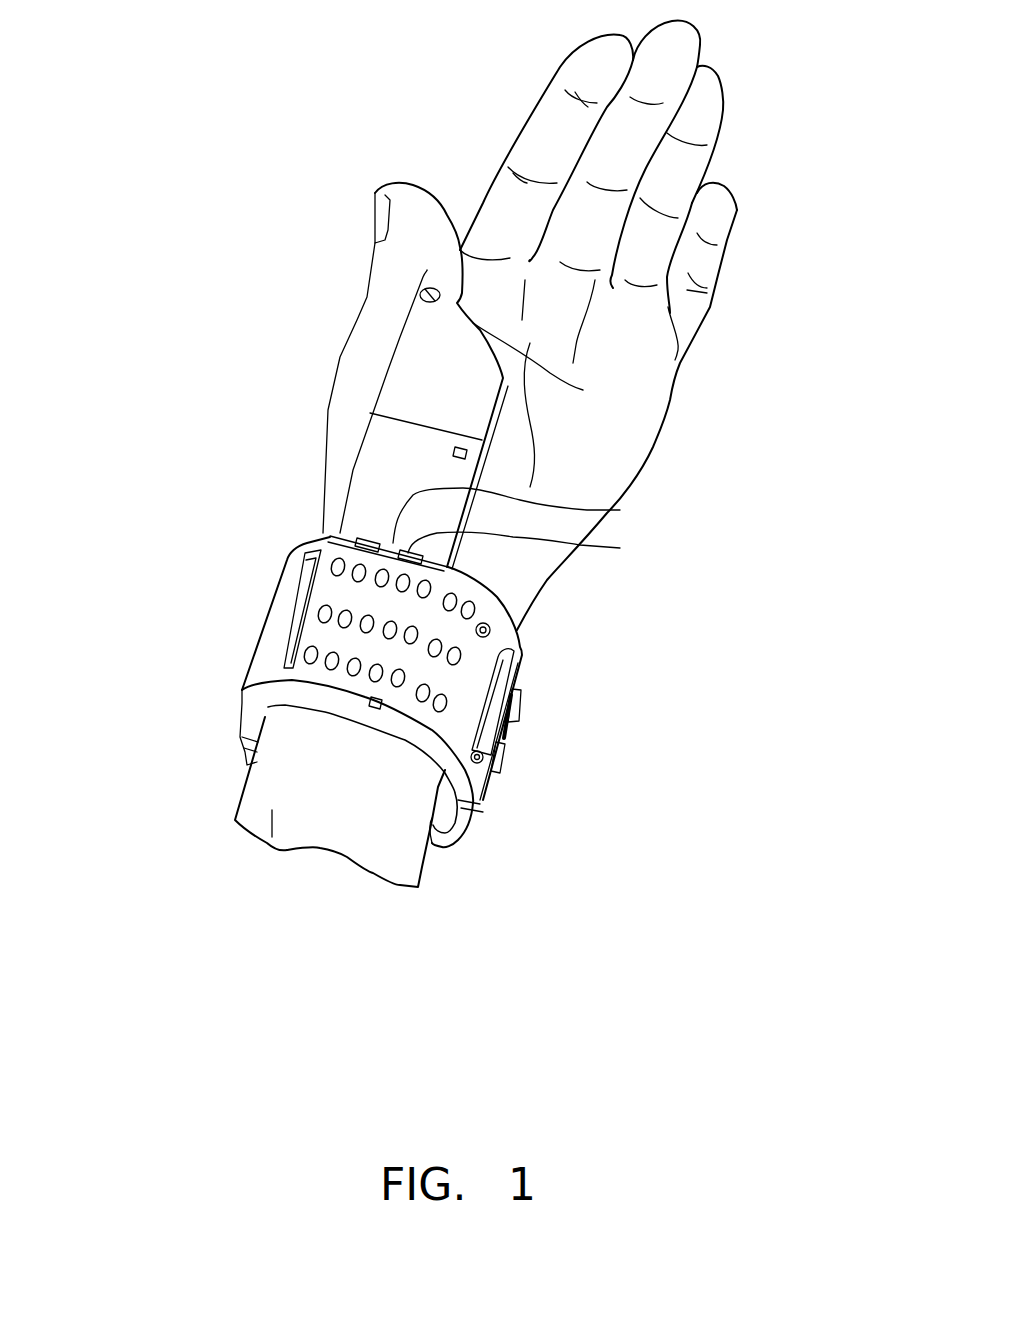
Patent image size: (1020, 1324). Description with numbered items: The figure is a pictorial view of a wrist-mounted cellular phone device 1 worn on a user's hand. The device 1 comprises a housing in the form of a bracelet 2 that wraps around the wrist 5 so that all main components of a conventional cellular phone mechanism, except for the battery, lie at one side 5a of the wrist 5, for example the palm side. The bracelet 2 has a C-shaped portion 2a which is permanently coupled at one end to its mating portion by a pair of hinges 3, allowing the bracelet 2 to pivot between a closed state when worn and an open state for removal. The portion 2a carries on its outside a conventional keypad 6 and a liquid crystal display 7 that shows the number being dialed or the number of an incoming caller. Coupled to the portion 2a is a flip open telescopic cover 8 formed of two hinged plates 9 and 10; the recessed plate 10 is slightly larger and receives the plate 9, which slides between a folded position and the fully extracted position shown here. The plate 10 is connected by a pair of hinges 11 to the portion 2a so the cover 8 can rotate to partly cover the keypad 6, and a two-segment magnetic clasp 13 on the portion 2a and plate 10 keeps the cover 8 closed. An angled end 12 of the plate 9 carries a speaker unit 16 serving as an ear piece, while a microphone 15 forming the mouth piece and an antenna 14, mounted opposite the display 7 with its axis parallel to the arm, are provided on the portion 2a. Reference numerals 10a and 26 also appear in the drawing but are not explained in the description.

The device 1 is at (156, 221).
The bracelet 2 is at (614, 687).
The C-shaped portion 2a is at (505, 635).
The hinges 3 is at (521, 711).
The wrist 5 is at (272, 837).
The one side of the wrist 5a is at (610, 442).
The keypad 6 is at (242, 690).
The liquid crystal display 7 is at (282, 626).
The flip open telescopic cover 8 is at (512, 435).
The plate 9 is at (407, 377).
The plate 10 is at (383, 452).
The upper strap 10a is at (620, 510).
The hinges 11 is at (620, 548).
The angled end 12 is at (423, 277).
The two-segment magnetic clasp 13 is at (455, 449).
The antenna 14 is at (506, 673).
The microphone 15 is at (490, 622).
The speaker unit 16 is at (420, 293).
The band end 26 is at (457, 847).